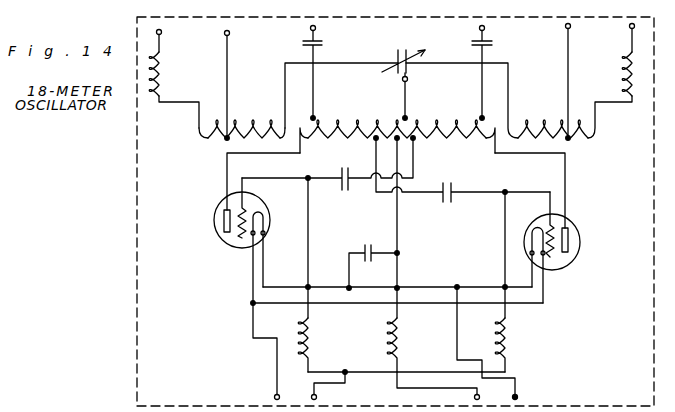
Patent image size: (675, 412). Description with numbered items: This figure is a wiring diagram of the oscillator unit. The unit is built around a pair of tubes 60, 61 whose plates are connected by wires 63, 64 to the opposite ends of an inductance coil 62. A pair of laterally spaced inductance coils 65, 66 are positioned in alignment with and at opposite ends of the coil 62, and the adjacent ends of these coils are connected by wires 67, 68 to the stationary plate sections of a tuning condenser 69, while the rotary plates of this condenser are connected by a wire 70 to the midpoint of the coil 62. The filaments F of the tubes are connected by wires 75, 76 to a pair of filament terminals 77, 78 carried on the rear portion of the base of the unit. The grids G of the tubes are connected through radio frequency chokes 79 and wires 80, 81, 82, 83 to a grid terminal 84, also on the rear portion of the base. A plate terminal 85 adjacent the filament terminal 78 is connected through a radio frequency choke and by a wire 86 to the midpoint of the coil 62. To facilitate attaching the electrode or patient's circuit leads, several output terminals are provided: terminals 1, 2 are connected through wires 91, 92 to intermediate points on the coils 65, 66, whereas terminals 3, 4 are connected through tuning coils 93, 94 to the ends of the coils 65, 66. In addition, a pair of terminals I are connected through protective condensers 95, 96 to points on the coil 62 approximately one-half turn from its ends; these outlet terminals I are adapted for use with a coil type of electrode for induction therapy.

The output terminal 4 is at (162, 32).
The tuning coil 94 is at (163, 72).
The output terminal 2 is at (230, 33).
The wire 92 is at (227, 72).
The inductance coil 66 is at (264, 118).
The wire 68 is at (284, 64).
The outlet terminal I is at (316, 28).
The protective condenser 95 is at (322, 43).
The tuning condenser 69 is at (403, 52).
The wire 70 is at (405, 89).
The inductance coil 62 is at (366, 118).
The protective condenser 96 is at (474, 45).
The wire 67 is at (508, 68).
The inductance coil 65 is at (549, 108).
The output terminal 1 is at (566, 27).
The wire 91 is at (569, 68).
The output terminal 3 is at (630, 27).
The tuning coil 93 is at (625, 79).
The wire 63 is at (222, 171).
The wire 64 is at (566, 168).
The tube 60 is at (221, 242).
The tube 61 is at (574, 258).
The grid G is at (242, 238).
The filament F is at (268, 230).
The wire 80 is at (308, 196).
The wire 81 is at (506, 195).
The wire 86 is at (397, 235).
The radio frequency choke 79 is at (318, 338).
The wire 82 is at (425, 370).
The wire 76 is at (457, 333).
The wire 75 is at (253, 327).
The filament terminal 77 is at (274, 397).
The wire 83 is at (347, 385).
The grid terminal 84 is at (316, 397).
The plate terminal 85 is at (474, 397).
The filament terminal 78 is at (518, 397).